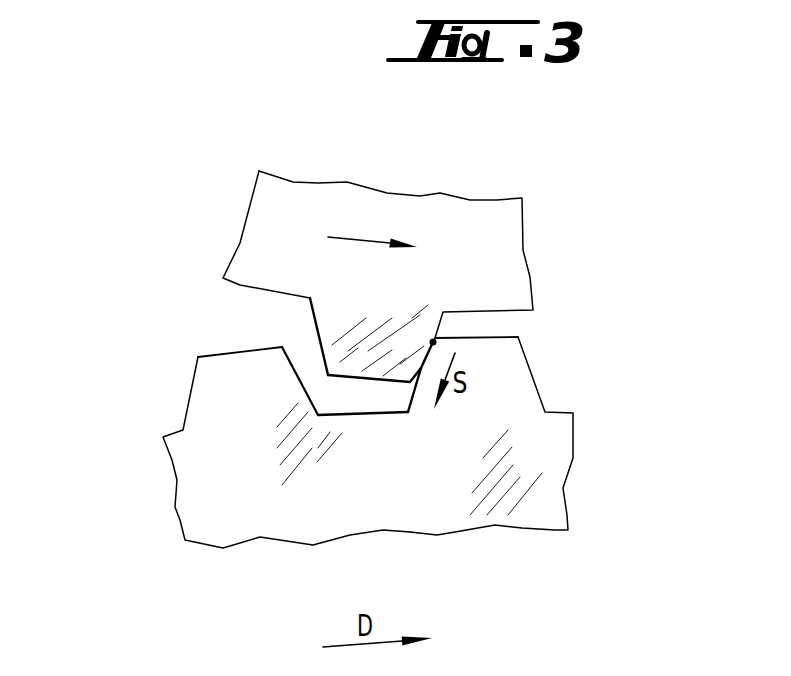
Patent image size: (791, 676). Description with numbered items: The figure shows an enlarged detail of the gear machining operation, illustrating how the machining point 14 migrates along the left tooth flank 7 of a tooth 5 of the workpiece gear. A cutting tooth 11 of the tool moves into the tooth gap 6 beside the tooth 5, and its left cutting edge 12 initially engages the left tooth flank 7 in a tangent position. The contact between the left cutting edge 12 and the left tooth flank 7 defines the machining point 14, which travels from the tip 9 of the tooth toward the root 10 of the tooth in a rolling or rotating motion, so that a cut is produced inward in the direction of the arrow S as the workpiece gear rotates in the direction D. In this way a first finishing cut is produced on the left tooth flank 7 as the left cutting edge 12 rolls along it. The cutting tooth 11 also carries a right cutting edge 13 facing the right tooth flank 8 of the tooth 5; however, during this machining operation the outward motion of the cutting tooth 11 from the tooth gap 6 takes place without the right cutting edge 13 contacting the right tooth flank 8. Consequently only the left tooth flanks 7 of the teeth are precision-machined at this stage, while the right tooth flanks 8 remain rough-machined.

The tooth 5 is at (540, 395).
The tooth gap 6 is at (267, 320).
The left tooth flank 7 is at (417, 395).
The right tooth flank 8 is at (297, 382).
The tip of the tooth 9 is at (228, 350).
The root of the tooth 10 is at (373, 413).
The cutting tooth 11 is at (392, 290).
The left cutting edge 12 is at (433, 342).
The right cutting edge 13 is at (315, 323).
The machining point 14 is at (433, 342).